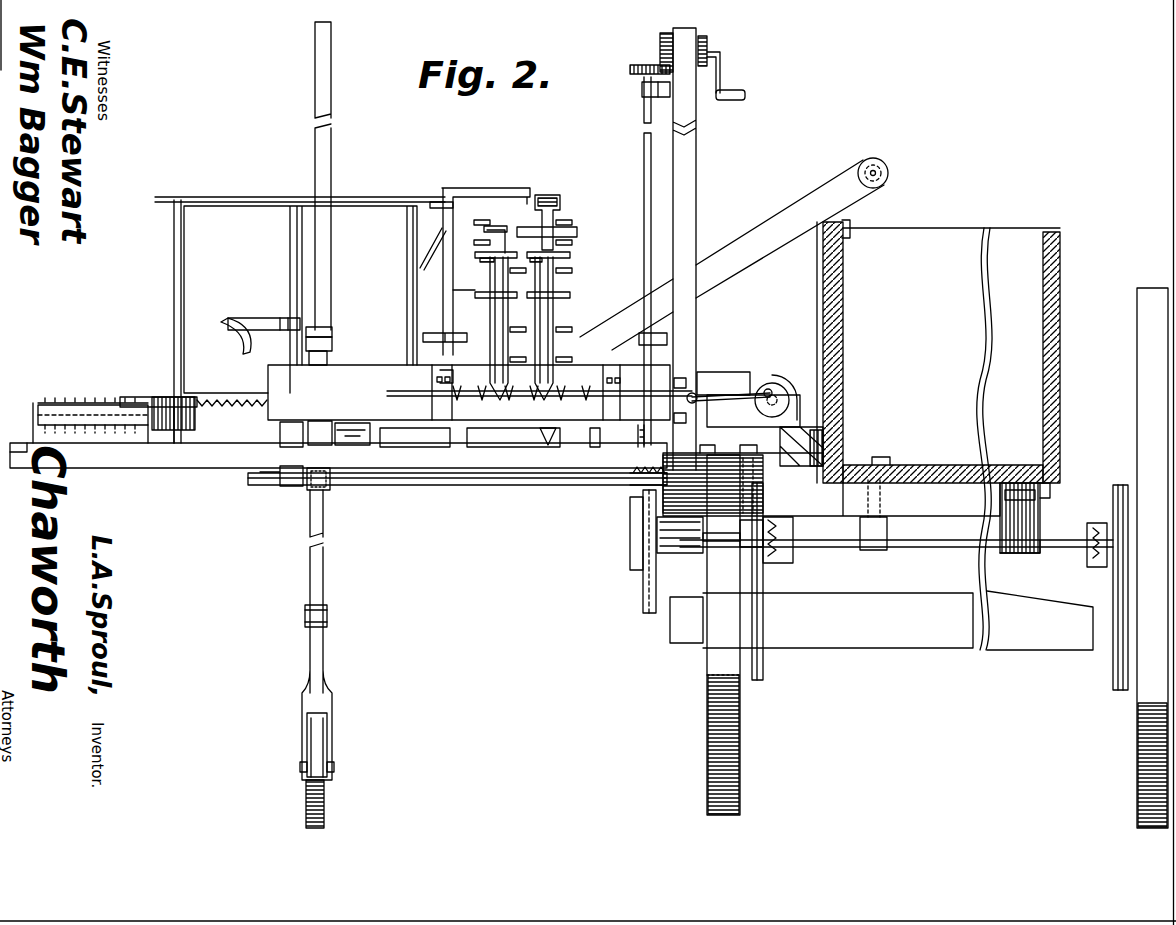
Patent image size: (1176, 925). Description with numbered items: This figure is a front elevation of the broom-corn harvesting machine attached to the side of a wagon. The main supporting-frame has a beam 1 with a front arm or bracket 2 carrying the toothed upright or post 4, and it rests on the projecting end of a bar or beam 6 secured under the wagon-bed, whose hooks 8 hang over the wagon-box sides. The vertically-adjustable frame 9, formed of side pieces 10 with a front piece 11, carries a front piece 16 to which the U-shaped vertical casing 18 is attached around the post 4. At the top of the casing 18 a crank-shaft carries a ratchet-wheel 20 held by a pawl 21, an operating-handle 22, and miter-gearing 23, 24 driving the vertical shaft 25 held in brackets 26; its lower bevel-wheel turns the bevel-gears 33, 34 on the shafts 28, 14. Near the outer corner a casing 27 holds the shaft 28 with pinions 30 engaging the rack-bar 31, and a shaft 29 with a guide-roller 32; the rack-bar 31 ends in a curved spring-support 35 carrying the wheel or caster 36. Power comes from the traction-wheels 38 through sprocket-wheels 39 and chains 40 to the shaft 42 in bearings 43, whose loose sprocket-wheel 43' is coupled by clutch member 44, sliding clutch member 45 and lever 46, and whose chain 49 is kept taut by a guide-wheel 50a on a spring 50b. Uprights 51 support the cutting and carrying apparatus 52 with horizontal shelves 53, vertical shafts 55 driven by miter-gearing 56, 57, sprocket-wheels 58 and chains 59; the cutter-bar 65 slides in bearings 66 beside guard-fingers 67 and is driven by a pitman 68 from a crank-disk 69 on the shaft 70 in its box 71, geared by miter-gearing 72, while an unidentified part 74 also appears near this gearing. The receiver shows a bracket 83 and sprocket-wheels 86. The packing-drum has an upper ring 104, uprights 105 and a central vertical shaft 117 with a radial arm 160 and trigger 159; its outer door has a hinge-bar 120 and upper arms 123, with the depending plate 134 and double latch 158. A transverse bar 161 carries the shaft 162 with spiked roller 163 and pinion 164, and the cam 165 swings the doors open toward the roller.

The upper ring 104 is at (220, 196).
The uprights 105 is at (174, 296).
The central vertical shaft 117 is at (258, 265).
The radial arm 160 is at (254, 318).
The trigger 159 is at (240, 340).
The cam 165 is at (140, 396).
The spiked roller 163 is at (93, 403).
The shaft 162 is at (44, 404).
The pinion 164 is at (150, 430).
The transverse bar 161 is at (160, 466).
The side pieces 10 is at (300, 437).
The rack-bar 31 is at (332, 268).
The guide-roller 32 is at (333, 320).
The shaft 29 is at (333, 340).
The casing 27 is at (328, 366).
The front piece 16 is at (469, 392).
The bearings 66 is at (412, 406).
The guard-fingers 67 is at (432, 405).
The double latch 158 is at (440, 332).
The depending plate 134 is at (430, 247).
The upper arms 123 is at (478, 194).
The hinge-bar 120 is at (457, 292).
The uprights 51 is at (490, 316).
The horizontal shelves 53 is at (490, 270).
The vertical shafts 55 is at (492, 285).
The sprocket-wheels 58 is at (500, 252).
The cutting and carrying apparatus 52 is at (565, 278).
The arm 74 is at (570, 292).
The bracket 83 is at (545, 195).
The sprocket-wheels 86 is at (558, 203).
The cutter-bar 65 is at (568, 400).
The miter-gearing 56 is at (523, 408).
The miter-gearing 57 is at (540, 433).
The chains 59 is at (636, 424).
The vertical casing 18 is at (690, 170).
The upright or post 4 is at (700, 128).
The vertical shaft 25 is at (642, 152).
The brackets 26 is at (642, 102).
The miter-gearing 23 is at (660, 45).
The miter-gearing 24 is at (630, 69).
The pawl 21 is at (708, 38).
The ratchet-wheel 20 is at (720, 63).
The operating-handle 22 is at (744, 91).
The hooks 8 is at (850, 224).
The pitman 68 is at (728, 387).
The shaft 70 is at (760, 410).
The crank-disk 69 is at (780, 385).
The miter-gearing 72 is at (768, 388).
The box 71 is at (790, 405).
The arm or bracket 2 is at (765, 458).
The beam 1 is at (830, 432).
The front piece 11 is at (758, 520).
The bevel-gear 33 is at (713, 484).
The bar or beam 6 is at (900, 512).
The traction-wheels 38 is at (707, 732).
The chains 40 is at (765, 652).
The sprocket-wheels 39 is at (762, 673).
The bearings 43 is at (912, 530).
The shaft 42 is at (920, 548).
The clutch member 44 is at (665, 555).
The sliding clutch member 45 is at (742, 550).
The lever 46 is at (705, 548).
The bevel-gear 34 is at (630, 498).
The shaft 14 is at (630, 516).
The chain 49 is at (632, 538).
The spring 50b is at (632, 552).
The guide-wheel 50a is at (643, 585).
The sprocket-wheel 43' is at (627, 561).
The shaft 28 is at (414, 486).
The vertically-adjustable frame 9 is at (471, 470).
The pinions 30 is at (300, 496).
The curved spring-support 35 is at (325, 668).
The wheel or caster 36 is at (306, 745).